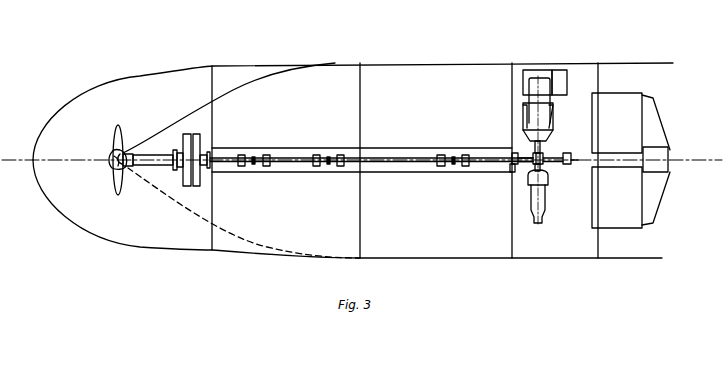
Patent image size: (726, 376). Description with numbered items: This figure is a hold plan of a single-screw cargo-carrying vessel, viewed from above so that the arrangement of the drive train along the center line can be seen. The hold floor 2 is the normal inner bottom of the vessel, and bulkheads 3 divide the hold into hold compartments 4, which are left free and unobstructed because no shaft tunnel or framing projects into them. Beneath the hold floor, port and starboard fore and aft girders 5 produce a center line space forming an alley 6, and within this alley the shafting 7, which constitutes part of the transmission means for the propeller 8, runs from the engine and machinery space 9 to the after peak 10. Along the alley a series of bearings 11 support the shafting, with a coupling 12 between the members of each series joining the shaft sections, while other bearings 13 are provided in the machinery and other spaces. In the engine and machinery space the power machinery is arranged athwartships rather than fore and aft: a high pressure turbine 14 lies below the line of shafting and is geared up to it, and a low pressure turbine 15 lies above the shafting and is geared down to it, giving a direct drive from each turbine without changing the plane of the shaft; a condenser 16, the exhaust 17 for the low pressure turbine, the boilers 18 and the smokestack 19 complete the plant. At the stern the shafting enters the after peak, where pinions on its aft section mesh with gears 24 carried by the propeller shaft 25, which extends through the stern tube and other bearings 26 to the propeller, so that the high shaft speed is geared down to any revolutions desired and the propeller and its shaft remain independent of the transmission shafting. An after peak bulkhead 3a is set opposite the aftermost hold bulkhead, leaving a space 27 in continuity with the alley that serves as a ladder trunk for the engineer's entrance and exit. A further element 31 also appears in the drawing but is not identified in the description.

The hold floor 2 is at (433, 238).
The bulkheads 3 is at (223, 150).
The after peak bulkhead 3a is at (212, 118).
The hold compartments 4 is at (366, 155).
The fore and aft girders 5 is at (395, 148).
The alley 6 is at (427, 166).
The shafting 7 is at (521, 153).
The propeller 8 is at (115, 187).
The engine and machinery space 9 is at (564, 232).
The after peak 10 is at (163, 140).
The bearings 11 is at (266, 155).
The coupling 12 is at (329, 165).
The bearings 13 is at (569, 154).
The high pressure turbine 14 is at (543, 200).
The low pressure turbine 15 is at (548, 128).
The condenser 16 is at (560, 80).
The exhaust 17 is at (534, 86).
The boilers 18 is at (631, 160).
The smokestack 19 is at (657, 156).
The gears 24 is at (196, 186).
The propeller shaft 25 is at (130, 154).
The stern tube bearings 26 is at (160, 168).
The space 27 is at (222, 168).
The thrust bearing 31 is at (512, 168).